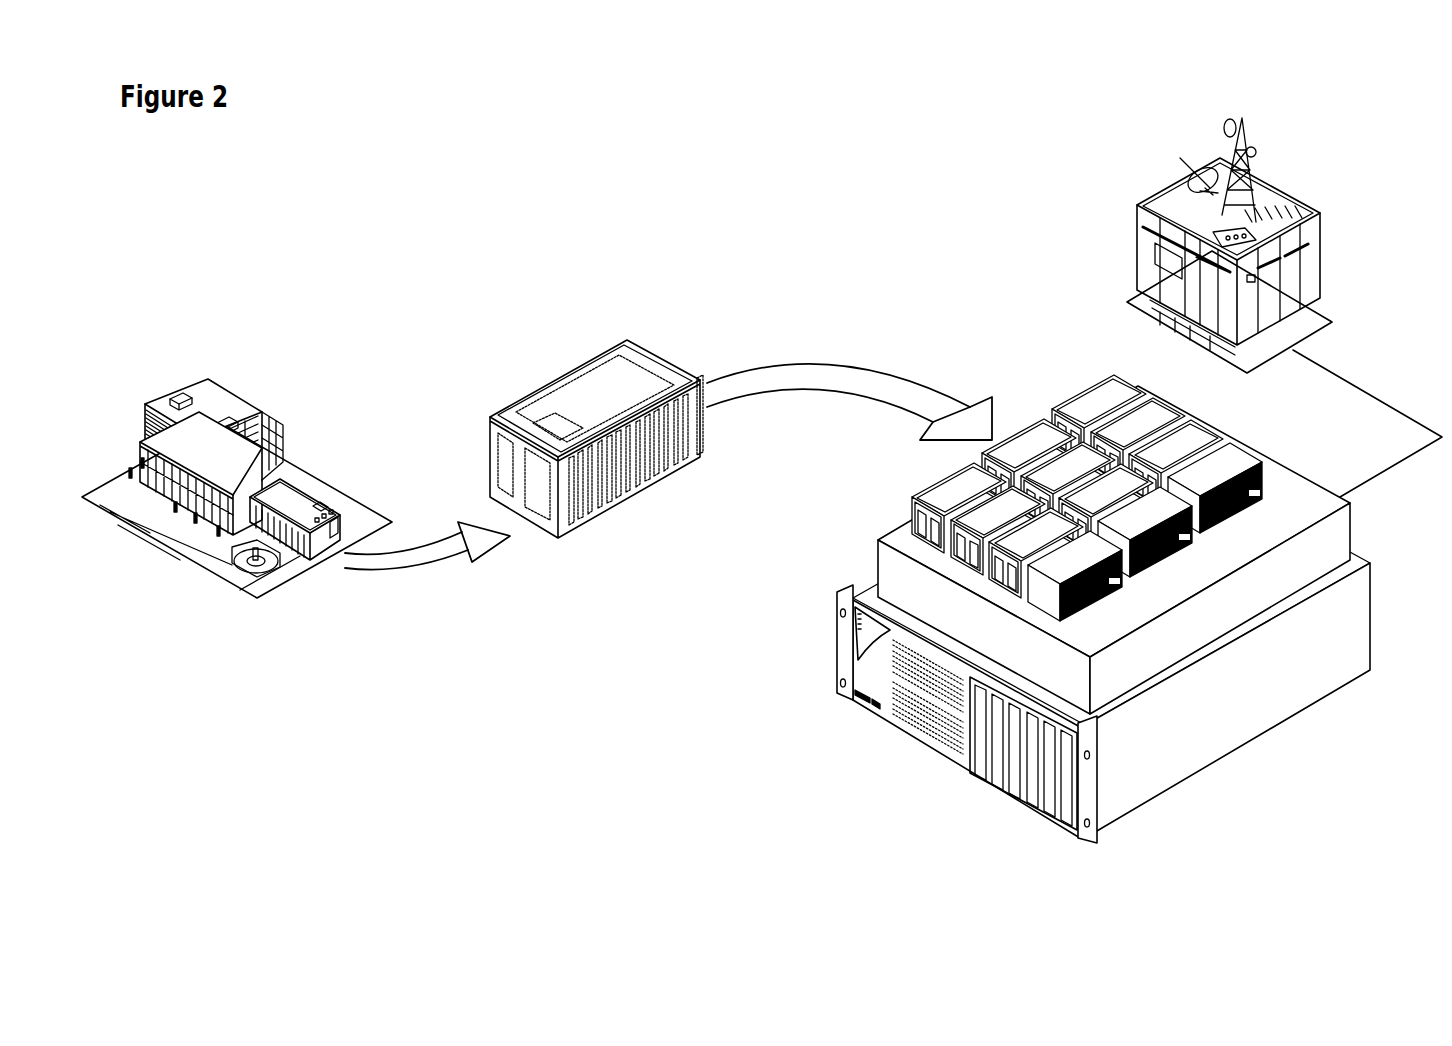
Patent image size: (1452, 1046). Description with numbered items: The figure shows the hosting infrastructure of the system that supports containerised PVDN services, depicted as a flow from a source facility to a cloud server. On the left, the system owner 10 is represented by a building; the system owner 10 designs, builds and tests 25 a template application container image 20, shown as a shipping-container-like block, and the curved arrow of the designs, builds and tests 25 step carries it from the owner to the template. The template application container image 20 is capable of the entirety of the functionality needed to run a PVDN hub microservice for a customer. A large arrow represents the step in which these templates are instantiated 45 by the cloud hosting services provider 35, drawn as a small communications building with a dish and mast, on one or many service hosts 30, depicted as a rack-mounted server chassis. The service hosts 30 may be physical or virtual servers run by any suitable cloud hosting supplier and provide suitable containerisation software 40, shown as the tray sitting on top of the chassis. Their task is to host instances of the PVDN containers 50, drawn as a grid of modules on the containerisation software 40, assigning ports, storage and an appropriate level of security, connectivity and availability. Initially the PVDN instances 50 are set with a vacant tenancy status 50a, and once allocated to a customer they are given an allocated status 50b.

The system owner 10 is at (185, 398).
The template application container image 20 is at (528, 407).
The designs, builds and tests 25 is at (395, 580).
The service hosts 30 is at (1317, 672).
The cloud hosting services provider 35 is at (1180, 207).
The containerisation software 40 is at (1330, 547).
The instantiated 45 is at (827, 383).
The PVDN containers 50 is at (1031, 477).
The vacant tenancy status 50a is at (1033, 447).
The allocated status 50b is at (1118, 400).